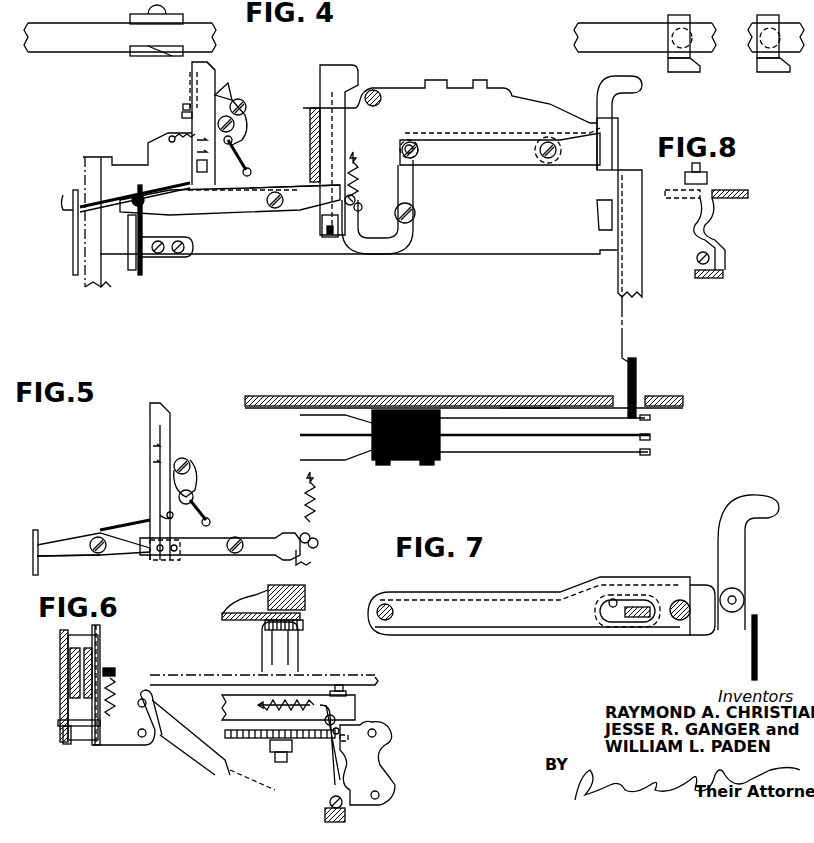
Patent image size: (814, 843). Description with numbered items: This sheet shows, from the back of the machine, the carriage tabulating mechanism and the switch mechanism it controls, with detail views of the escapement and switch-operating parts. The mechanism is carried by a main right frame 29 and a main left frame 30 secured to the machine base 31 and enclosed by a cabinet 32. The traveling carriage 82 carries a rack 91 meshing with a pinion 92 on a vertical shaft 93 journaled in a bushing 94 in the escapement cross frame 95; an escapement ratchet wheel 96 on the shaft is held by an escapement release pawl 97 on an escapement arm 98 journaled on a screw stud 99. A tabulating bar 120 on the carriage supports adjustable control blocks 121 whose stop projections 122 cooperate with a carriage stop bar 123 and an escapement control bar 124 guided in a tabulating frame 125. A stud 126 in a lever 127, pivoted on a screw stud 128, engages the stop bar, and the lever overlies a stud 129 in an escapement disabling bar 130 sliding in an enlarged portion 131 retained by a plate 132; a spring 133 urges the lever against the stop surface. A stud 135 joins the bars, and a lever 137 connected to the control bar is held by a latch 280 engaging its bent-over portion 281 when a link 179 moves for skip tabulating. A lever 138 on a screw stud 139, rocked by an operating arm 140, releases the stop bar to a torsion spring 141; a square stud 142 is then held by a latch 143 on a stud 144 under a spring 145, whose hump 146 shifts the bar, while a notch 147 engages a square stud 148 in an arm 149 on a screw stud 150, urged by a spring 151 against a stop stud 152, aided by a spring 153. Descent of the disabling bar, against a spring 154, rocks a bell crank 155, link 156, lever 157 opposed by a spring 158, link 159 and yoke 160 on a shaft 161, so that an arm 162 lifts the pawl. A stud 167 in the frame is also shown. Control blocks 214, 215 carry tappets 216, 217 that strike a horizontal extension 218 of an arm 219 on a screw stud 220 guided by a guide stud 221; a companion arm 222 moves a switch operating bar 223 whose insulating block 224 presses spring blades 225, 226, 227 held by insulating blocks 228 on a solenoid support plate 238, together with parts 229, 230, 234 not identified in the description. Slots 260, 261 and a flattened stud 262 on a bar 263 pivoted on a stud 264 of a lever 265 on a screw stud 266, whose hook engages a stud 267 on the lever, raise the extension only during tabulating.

In FIG. 4, the main right frame 29 is at (85, 272).
In FIG. 4, the main left frame 30 is at (618, 278).
In FIG. 4, the machine base 31 is at (378, 396).
In FIG. 6, the case or cabinet 32 is at (342, 675).
In FIG. 6, the traveling carriage 82 is at (250, 596).
In FIG. 6, the rack 91 is at (225, 620).
In FIG. 6, the pinion 92 is at (303, 625).
In FIG. 6, the vertical shaft 93 is at (270, 748).
In FIG. 6, the bushing 94 is at (262, 657).
In FIG. 6, the escapement cross frame 95 is at (219, 709).
In FIG. 6, the escapement ratchet wheel 96 is at (225, 732).
In FIG. 8, the escapement release pawl 97 is at (720, 190).
In FIG. 6, the escapement release pawl 97 is at (355, 722).
In FIG. 8, the escapement arm 98 is at (672, 198).
In FIG. 8, the screw stud 99 is at (700, 168).
In FIG. 6, the screw stud 99 is at (346, 692).
In FIG. 4, the tabulating bar 120 is at (62, 52).
In FIG. 4, the control blocks 121 is at (178, 14).
In FIG. 4, the tabulating stop projection 122 is at (170, 57).
In FIG. 4, the carriage stop bar 123 is at (205, 62).
In FIG. 5, the carriage stop bar 123 is at (152, 412).
In FIG. 4, the escapement control bar 124 is at (212, 70).
In FIG. 4, the tabulating frame 125 is at (312, 108).
In FIG. 6, the tabulating frame 125 is at (70, 672).
In FIG. 5, the stud 126 is at (165, 558).
In FIG. 5, the lever 127 is at (275, 535).
In FIG. 4, the screw stud 128 is at (292, 198).
In FIG. 5, the screw stud 128 is at (251, 544).
In FIG. 4, the stud 129 is at (322, 220).
In FIG. 6, the stud 129 is at (58, 718).
In FIG. 4, the escapement disabling bar 130 is at (332, 130).
In FIG. 6, the escapement disabling bar 130 is at (90, 637).
In FIG. 4, the enlarged portion 131 is at (340, 120).
In FIG. 6, the enlarged portion 131 is at (60, 658).
In FIG. 6, the plate 132 is at (100, 643).
In FIG. 4, the spring 133 is at (356, 170).
In FIG. 5, the spring 133 is at (308, 500).
In FIG. 4, the stud 135 is at (197, 165).
In FIG. 5, the stud 135 is at (168, 512).
In FIG. 4, the lever 137 is at (280, 188).
In FIG. 4, the lever 138 is at (65, 195).
In FIG. 5, the lever 138 is at (115, 555).
In FIG. 5, the screw stud 139 is at (90, 537).
In FIG. 4, the operating arm 140 is at (73, 222).
In FIG. 5, the operating arm 140 is at (52, 553).
In FIG. 4, the torsion spring 141 is at (175, 185).
In FIG. 5, the torsion spring 141 is at (125, 525).
In FIG. 5, the square stud 142 is at (175, 555).
In FIG. 4, the latch 143 is at (240, 135).
In FIG. 5, the latch 143 is at (196, 472).
In FIG. 5, the stud 144 is at (184, 452).
In FIG. 4, the spring 145 is at (250, 168).
In FIG. 5, the spring 145 is at (207, 517).
In FIG. 4, the hump 146 is at (245, 155).
In FIG. 5, the hump 146 is at (178, 495).
In FIG. 4, the notch 147 is at (249, 100).
In FIG. 4, the square stud 148 is at (190, 72).
In FIG. 4, the arm 149 is at (232, 92).
In FIG. 4, the screw stud 150 is at (234, 122).
In FIG. 4, the spring 151 is at (182, 114).
In FIG. 4, the stop stud 152 is at (185, 104).
In FIG. 4, the spring 153 is at (174, 136).
In FIG. 6, the spring 154 is at (115, 672).
In FIG. 6, the bell crank 155 is at (125, 745).
In FIG. 6, the link 156 is at (178, 760).
In FIG. 6, the lever 157 is at (325, 745).
In FIG. 6, the spring 158 is at (258, 705).
In FIG. 6, the link 159 is at (385, 755).
In FIG. 8, the yoke 160 is at (720, 276).
In FIG. 6, the yoke 160 is at (328, 815).
In FIG. 8, the shaft 161 is at (710, 257).
In FIG. 6, the shaft 161 is at (330, 802).
In FIG. 8, the upwardly extending arm 162 is at (708, 230).
In FIG. 4, the stud 167 is at (381, 98).
In FIG. 4, the link 179 is at (132, 268).
In FIG. 4, the sub-balance control block 214 is at (768, 15).
In FIG. 4, the balance control block 215 is at (682, 15).
In FIG. 4, the sub-balance control tappet 216 is at (760, 72).
In FIG. 4, the balance control tappet 217 is at (668, 72).
In FIG. 4, the horizontal extension 218 is at (612, 80).
In FIG. 7, the horizontal extension 218 is at (770, 515).
In FIG. 4, the arm 219 is at (540, 165).
In FIG. 7, the arm 219 is at (515, 635).
In FIG. 4, the screw stud 220 is at (400, 140).
In FIG. 7, the screw stud 220 is at (394, 612).
In FIG. 7, the guide stud 221 is at (668, 600).
In FIG. 4, the companion arm 222 is at (545, 130).
In FIG. 7, the companion arm 222 is at (500, 605).
In FIG. 4, the switch operating bar 223 is at (622, 345).
In FIG. 7, the switch operating bar 223 is at (757, 650).
In FIG. 4, the switch operating block 224 is at (636, 372).
In FIG. 4, the upper spring blade 225 is at (650, 418).
In FIG. 4, the central spring blade 226 is at (650, 437).
In FIG. 4, the lower spring blade 227 is at (650, 453).
In FIG. 4, the insulating blocks 228 is at (430, 462).
In FIG. 4, the wire 229 is at (300, 435).
In FIG. 4, the wire 230 is at (300, 415).
In FIG. 4, the wire 234 is at (300, 460).
In FIG. 4, the solenoid support plate 238 is at (530, 384).
In FIG. 7, the slot 260 is at (600, 615).
In FIG. 7, the slot 261 is at (612, 598).
In FIG. 4, the flattened stud 262 is at (550, 158).
In FIG. 7, the flattened stud 262 is at (638, 605).
In FIG. 4, the bar 263 is at (478, 155).
In FIG. 4, the stud 264 is at (418, 150).
In FIG. 4, the lever 265 is at (410, 188).
In FIG. 5, the lever 265 is at (312, 558).
In FIG. 4, the screw stud 266 is at (415, 215).
In FIG. 4, the stud 267 is at (363, 198).
In FIG. 5, the stud 267 is at (316, 540).
In FIG. 4, the latch 280 is at (143, 220).
In FIG. 4, the bent-over portion 281 is at (136, 194).